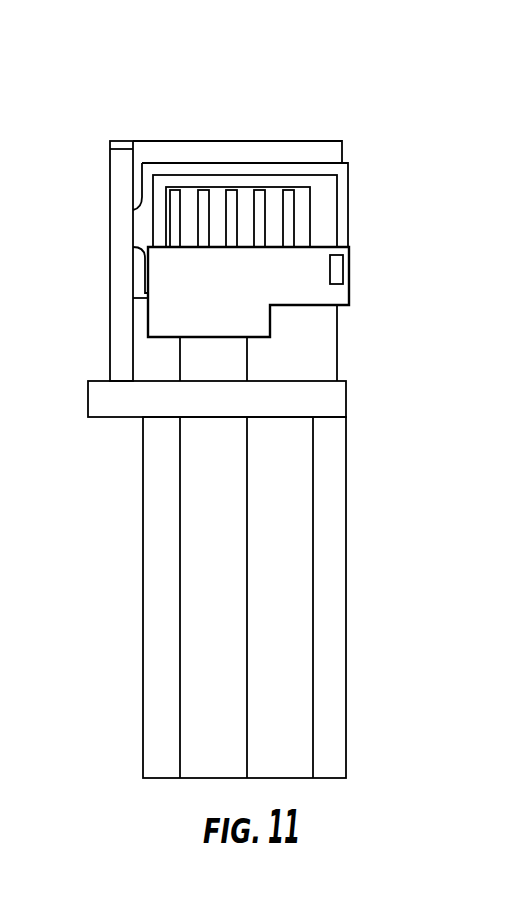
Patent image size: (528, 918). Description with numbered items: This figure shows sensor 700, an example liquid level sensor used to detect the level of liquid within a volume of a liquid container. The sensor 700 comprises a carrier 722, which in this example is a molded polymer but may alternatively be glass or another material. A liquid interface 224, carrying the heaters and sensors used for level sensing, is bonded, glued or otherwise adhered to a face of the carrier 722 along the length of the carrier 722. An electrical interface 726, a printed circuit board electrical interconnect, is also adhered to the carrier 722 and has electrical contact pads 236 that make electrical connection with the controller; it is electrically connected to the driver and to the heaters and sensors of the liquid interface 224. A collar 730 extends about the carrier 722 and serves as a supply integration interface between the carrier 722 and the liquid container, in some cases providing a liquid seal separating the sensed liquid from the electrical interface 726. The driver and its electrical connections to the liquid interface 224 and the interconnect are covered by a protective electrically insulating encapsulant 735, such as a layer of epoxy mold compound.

The sensor 700 is at (393, 110).
The carrier 722 is at (112, 177).
The electrical interface 726 is at (282, 163).
The electrical contact pad 236 is at (234, 192).
The encapsulant 735 is at (352, 290).
The collar 730 is at (88, 398).
The liquid interface 224 is at (247, 522).